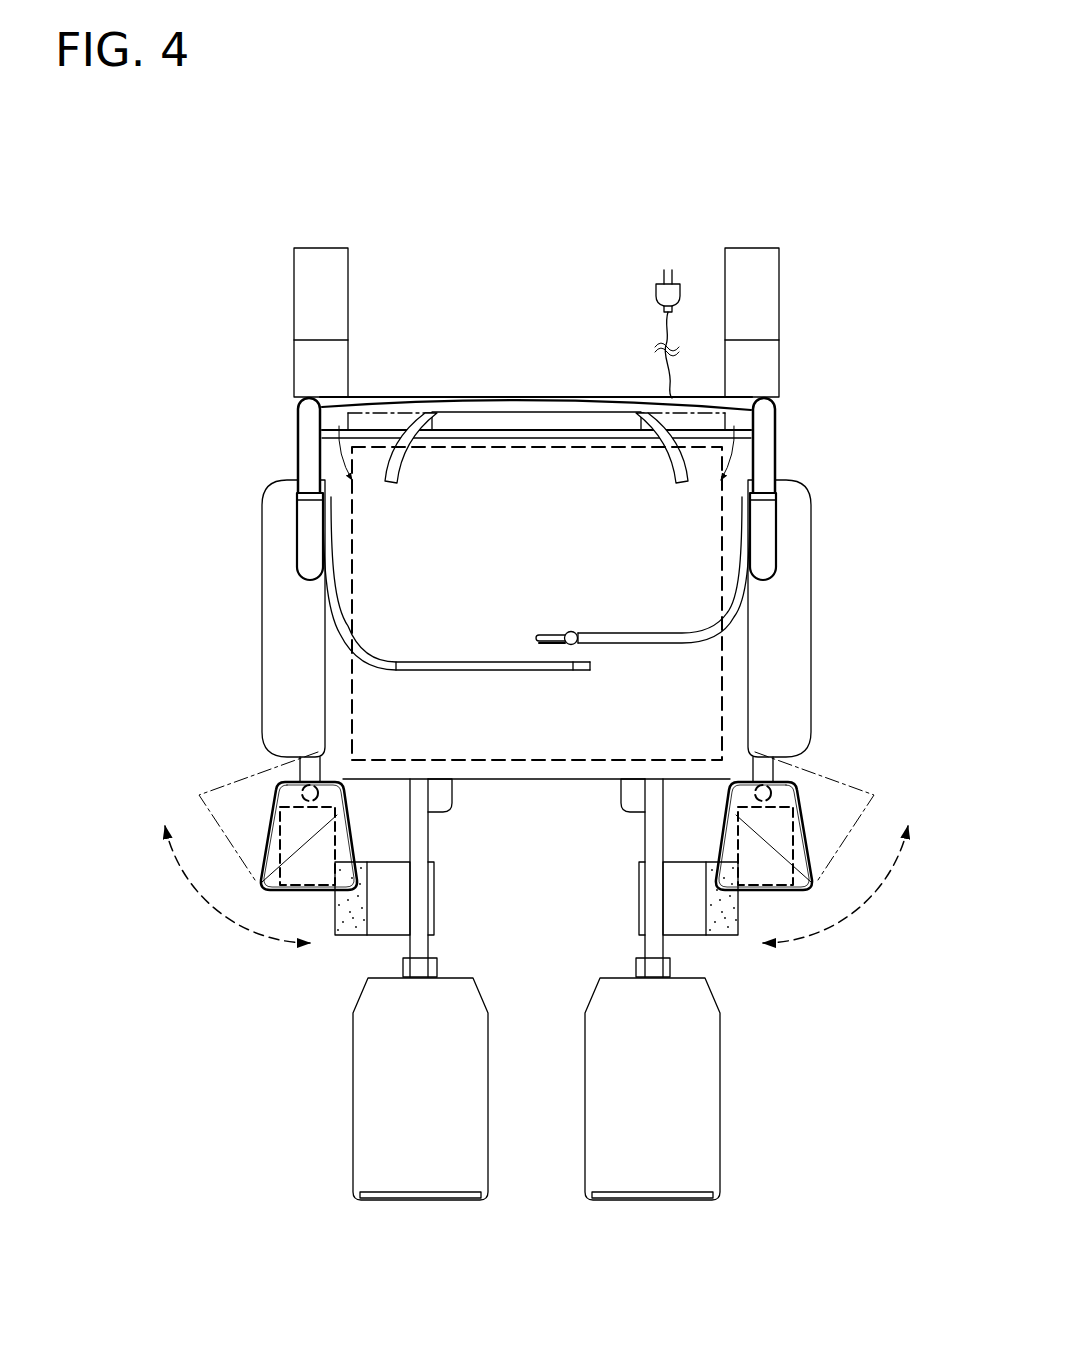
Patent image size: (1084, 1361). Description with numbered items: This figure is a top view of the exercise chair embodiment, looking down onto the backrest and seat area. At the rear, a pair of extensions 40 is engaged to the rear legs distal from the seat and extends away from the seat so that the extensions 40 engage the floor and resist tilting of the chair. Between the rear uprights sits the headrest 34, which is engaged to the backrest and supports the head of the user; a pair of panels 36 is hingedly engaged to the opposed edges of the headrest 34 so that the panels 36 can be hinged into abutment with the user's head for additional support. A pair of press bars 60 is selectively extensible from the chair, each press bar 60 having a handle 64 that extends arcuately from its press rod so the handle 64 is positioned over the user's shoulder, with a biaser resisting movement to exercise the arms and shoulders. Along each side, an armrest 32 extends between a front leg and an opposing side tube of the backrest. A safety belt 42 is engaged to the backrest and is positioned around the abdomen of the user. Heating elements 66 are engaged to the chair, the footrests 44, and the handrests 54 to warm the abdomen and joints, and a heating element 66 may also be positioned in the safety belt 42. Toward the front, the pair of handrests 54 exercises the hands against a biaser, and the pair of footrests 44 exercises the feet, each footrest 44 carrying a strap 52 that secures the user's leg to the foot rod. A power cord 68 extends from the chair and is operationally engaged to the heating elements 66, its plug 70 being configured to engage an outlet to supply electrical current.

The extensions 40 is at (746, 277).
The plug 70 is at (688, 297).
The power cord 68 is at (690, 360).
The headrest 34 is at (534, 423).
The panels 36 is at (689, 491).
The press bars 60 is at (746, 417).
The handle 64 is at (766, 540).
The armrests 32 is at (758, 630).
The safety belt 42 is at (548, 671).
The heating elements 66 is at (346, 708).
The handrests 54 is at (361, 809).
The strap 52 is at (386, 921).
The footrests 44 is at (621, 1093).